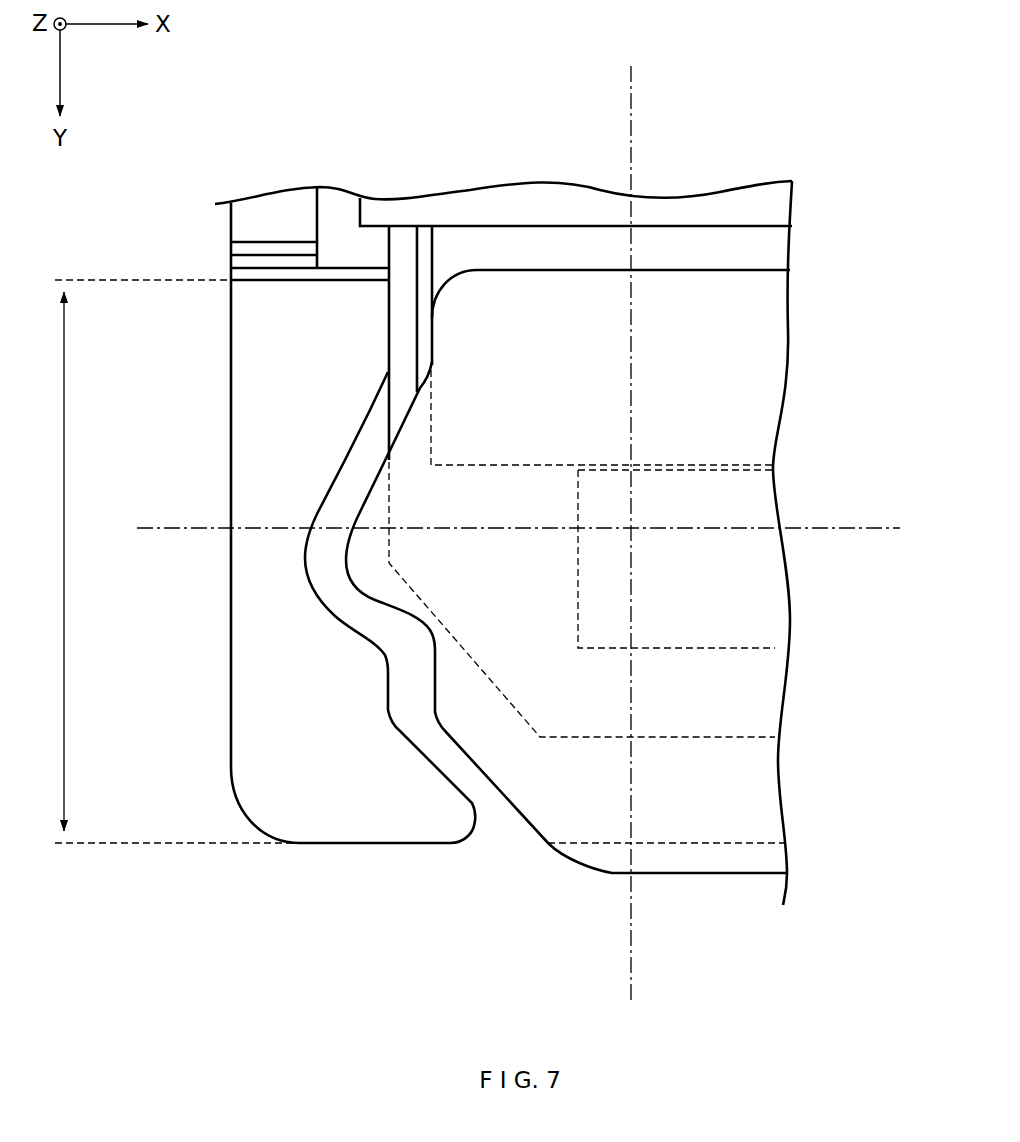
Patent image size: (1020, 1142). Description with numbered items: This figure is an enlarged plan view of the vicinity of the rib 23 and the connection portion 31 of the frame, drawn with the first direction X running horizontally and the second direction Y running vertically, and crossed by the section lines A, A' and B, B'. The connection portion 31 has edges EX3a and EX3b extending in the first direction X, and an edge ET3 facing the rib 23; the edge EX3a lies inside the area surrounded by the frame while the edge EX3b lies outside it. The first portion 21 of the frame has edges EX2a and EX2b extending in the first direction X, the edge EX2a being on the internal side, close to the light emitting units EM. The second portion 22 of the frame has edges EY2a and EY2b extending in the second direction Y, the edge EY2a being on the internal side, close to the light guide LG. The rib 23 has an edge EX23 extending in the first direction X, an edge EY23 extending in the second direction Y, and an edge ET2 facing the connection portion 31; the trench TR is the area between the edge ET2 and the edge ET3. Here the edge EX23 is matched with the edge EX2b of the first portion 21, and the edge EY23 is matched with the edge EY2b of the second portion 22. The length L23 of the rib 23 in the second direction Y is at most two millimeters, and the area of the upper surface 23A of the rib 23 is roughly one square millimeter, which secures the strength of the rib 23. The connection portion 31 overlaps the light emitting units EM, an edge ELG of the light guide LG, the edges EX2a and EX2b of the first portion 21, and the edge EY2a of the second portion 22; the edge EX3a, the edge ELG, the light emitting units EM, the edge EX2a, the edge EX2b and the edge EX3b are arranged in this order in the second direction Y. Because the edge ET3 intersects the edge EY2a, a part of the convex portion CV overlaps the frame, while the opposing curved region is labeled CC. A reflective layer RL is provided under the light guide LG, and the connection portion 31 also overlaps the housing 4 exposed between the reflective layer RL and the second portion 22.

The second portion 22 is at (252, 212).
The edge EY2b is at (222, 228).
The trench TR is at (357, 472).
The edge EY2a is at (396, 245).
The housing 4 is at (403, 283).
The reflective layer RL is at (422, 290).
The edge EX3a is at (676, 268).
The light guide LG is at (768, 252).
The rib 23 is at (252, 357).
The edge ELG is at (497, 466).
The edge EY23 is at (222, 462).
The length L23 is at (40, 561).
The concave portion CC is at (280, 565).
The convex portion CV is at (362, 565).
The light emitting units EM is at (768, 588).
The upper surface 23A is at (272, 678).
The connection portion 31 is at (768, 678).
The edge EX2a is at (690, 736).
The first portion 21 is at (760, 793).
The edge ET2 is at (425, 750).
The edge ET3 is at (470, 777).
The edge EX23 is at (337, 848).
The edge EX2b is at (713, 845).
The edge EX3b is at (670, 880).
The section line A is at (645, 531).
The section line A' is at (654, 995).
The section line B is at (506, 528).
The section line B' is at (917, 528).